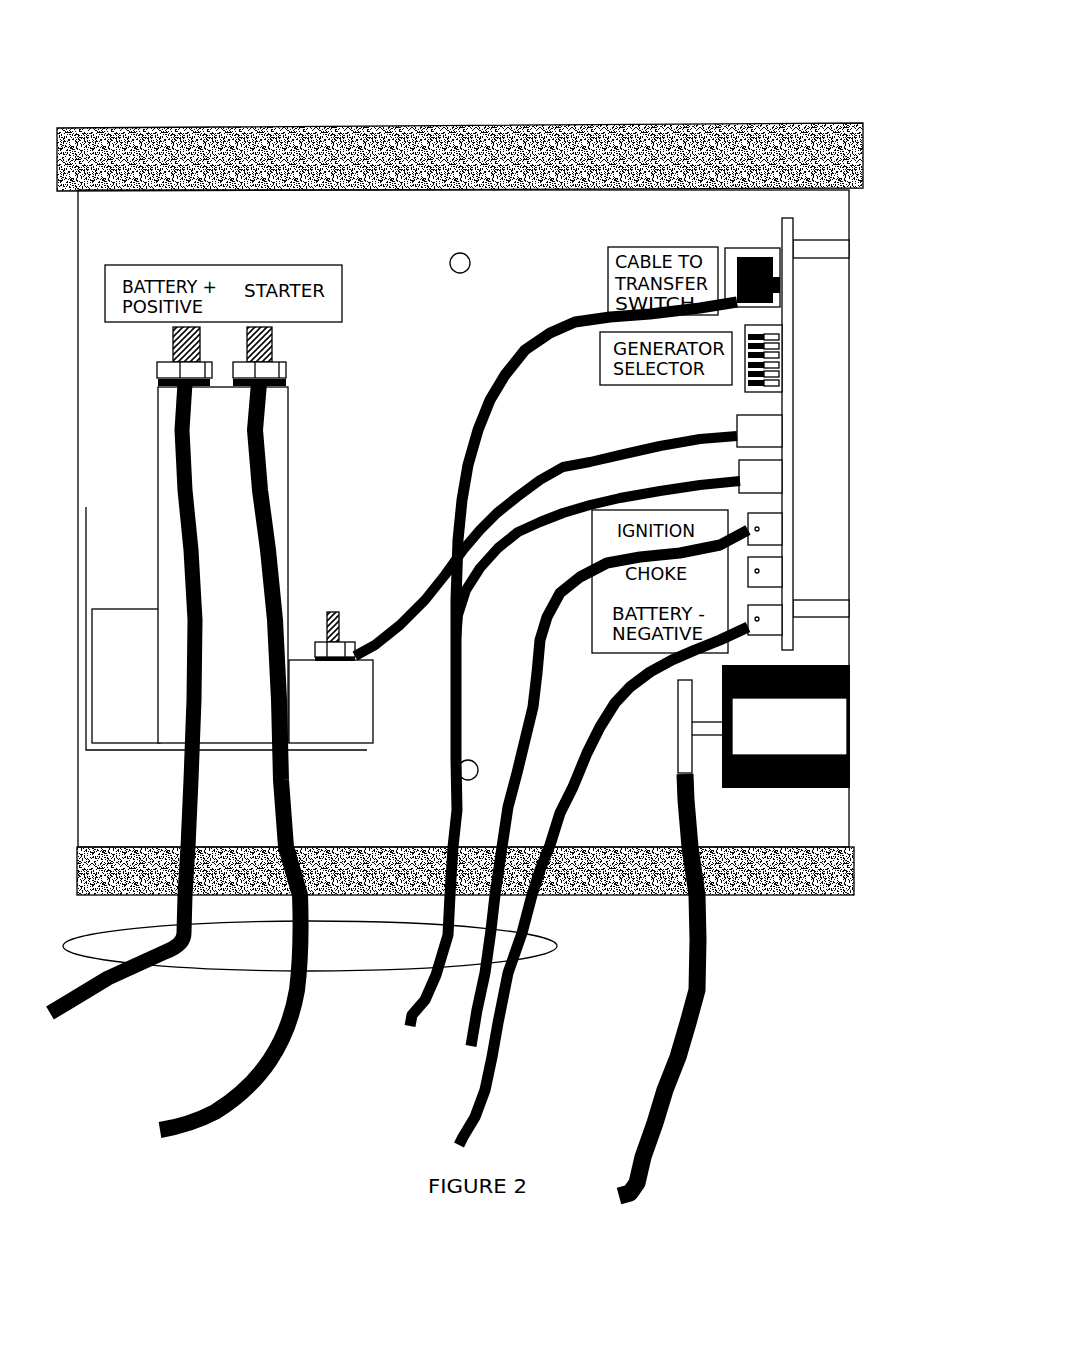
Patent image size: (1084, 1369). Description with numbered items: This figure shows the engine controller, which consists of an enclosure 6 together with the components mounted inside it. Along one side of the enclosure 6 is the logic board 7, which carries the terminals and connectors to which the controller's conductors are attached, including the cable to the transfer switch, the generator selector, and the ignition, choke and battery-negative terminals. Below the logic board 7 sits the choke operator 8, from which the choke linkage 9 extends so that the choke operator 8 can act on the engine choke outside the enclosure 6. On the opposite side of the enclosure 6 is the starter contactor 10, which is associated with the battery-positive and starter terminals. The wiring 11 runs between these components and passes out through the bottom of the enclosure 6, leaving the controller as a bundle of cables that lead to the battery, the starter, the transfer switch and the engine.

The enclosure 6 is at (655, 108).
The logic board 7 is at (796, 411).
The choke operator 8 is at (852, 710).
The choke linkage 9 is at (725, 977).
The starter contactor 10 is at (132, 652).
The wiring 11 is at (362, 982).